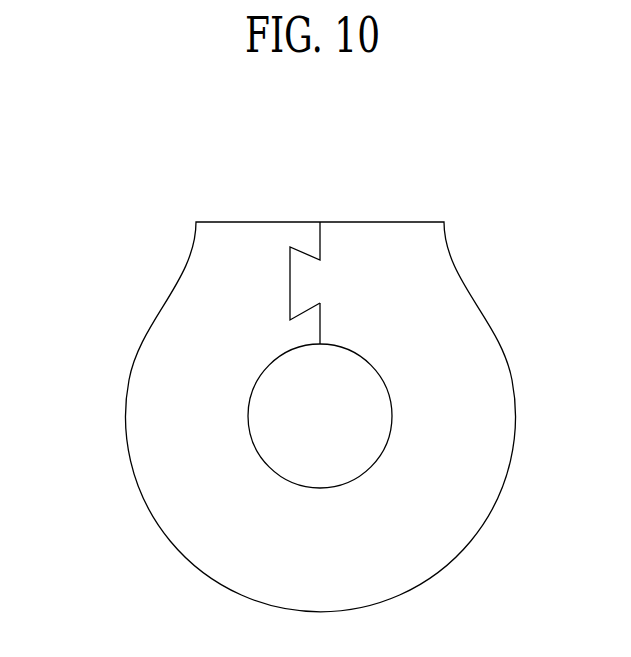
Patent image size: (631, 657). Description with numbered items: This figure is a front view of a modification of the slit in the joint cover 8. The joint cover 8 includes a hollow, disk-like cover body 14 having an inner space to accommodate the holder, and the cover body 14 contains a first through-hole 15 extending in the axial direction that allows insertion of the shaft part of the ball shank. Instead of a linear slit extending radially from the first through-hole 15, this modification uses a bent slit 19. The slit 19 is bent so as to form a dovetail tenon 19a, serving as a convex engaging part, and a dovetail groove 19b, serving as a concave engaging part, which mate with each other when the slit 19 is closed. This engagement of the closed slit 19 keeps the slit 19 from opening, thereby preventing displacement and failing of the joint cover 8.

The joint cover 8 is at (144, 265).
The cover body 14 is at (127, 410).
The first through-hole 15 is at (387, 394).
The bent slit 19 is at (240, 153).
The dovetail tenon 19a is at (290, 276).
The dovetail groove 19b is at (291, 298).